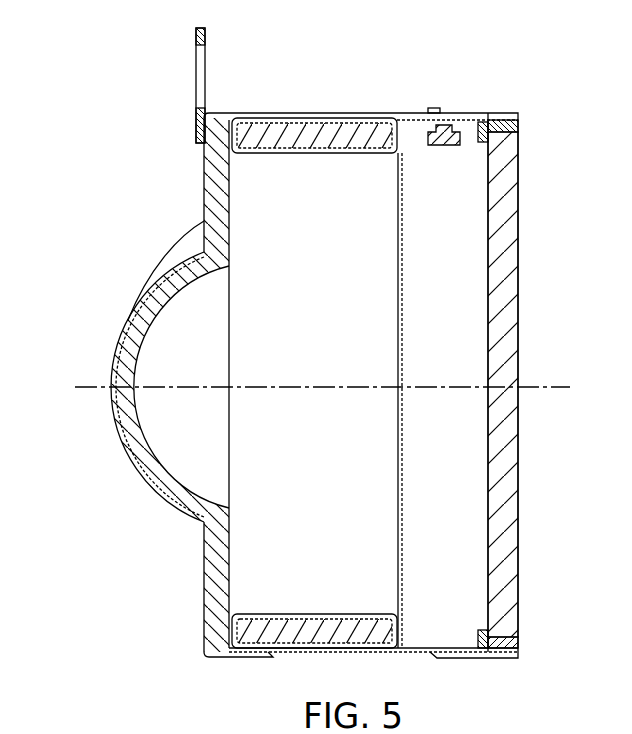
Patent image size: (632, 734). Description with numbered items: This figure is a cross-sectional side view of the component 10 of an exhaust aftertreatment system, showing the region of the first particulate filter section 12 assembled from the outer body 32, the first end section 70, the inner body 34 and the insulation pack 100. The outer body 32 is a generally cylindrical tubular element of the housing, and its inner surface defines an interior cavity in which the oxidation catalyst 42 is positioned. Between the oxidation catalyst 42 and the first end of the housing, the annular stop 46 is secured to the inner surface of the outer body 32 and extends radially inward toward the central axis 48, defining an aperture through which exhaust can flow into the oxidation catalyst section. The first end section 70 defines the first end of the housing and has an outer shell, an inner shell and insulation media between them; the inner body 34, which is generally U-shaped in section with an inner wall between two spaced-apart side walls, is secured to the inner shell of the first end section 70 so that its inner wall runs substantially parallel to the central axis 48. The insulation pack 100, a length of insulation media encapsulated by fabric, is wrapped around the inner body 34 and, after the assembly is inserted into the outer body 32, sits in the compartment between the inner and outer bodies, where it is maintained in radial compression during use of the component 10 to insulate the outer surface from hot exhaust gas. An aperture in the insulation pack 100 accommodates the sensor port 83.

The component 10 is at (112, 62).
The first particulate filter section 12 is at (231, 100).
The outer body 32 is at (298, 115).
The inner body 34 is at (284, 612).
The oxidation catalyst 42 is at (512, 198).
The annular stop 46 is at (401, 220).
The central axis 48 is at (307, 386).
The first end section 70 is at (160, 502).
The sensor port 83 is at (445, 132).
The insulation pack 100 is at (353, 125).